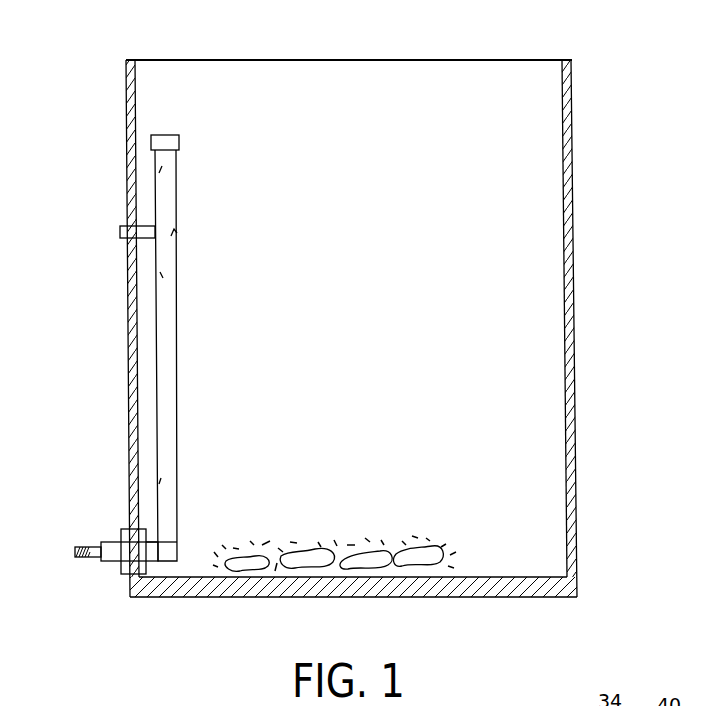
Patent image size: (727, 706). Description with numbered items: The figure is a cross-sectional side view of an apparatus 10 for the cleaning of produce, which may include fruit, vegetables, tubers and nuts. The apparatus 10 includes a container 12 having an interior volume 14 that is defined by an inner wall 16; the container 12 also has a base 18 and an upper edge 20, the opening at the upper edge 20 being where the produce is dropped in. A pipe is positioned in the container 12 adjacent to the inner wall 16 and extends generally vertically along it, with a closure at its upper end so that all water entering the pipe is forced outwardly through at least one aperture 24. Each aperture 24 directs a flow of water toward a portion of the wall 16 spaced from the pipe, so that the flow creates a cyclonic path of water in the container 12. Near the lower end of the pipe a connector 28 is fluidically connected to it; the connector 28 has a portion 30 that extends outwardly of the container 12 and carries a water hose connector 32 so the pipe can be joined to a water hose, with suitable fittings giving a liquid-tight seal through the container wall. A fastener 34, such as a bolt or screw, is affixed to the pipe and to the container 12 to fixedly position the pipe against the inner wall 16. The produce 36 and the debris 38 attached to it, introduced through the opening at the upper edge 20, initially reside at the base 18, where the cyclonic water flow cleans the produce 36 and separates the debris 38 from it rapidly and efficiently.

The apparatus 10 is at (606, 109).
The container 12 is at (574, 250).
The interior volume 14 is at (350, 297).
The inner wall 16 is at (567, 392).
The base 18 is at (508, 598).
The upper edge 20 is at (275, 60).
The aperture 24 is at (177, 233).
The connector 28 is at (108, 557).
The portion 30 is at (113, 541).
The water hose connector 32 is at (80, 548).
The fastener 34 is at (145, 239).
The produce 36 is at (312, 548).
The debris 38 is at (392, 540).